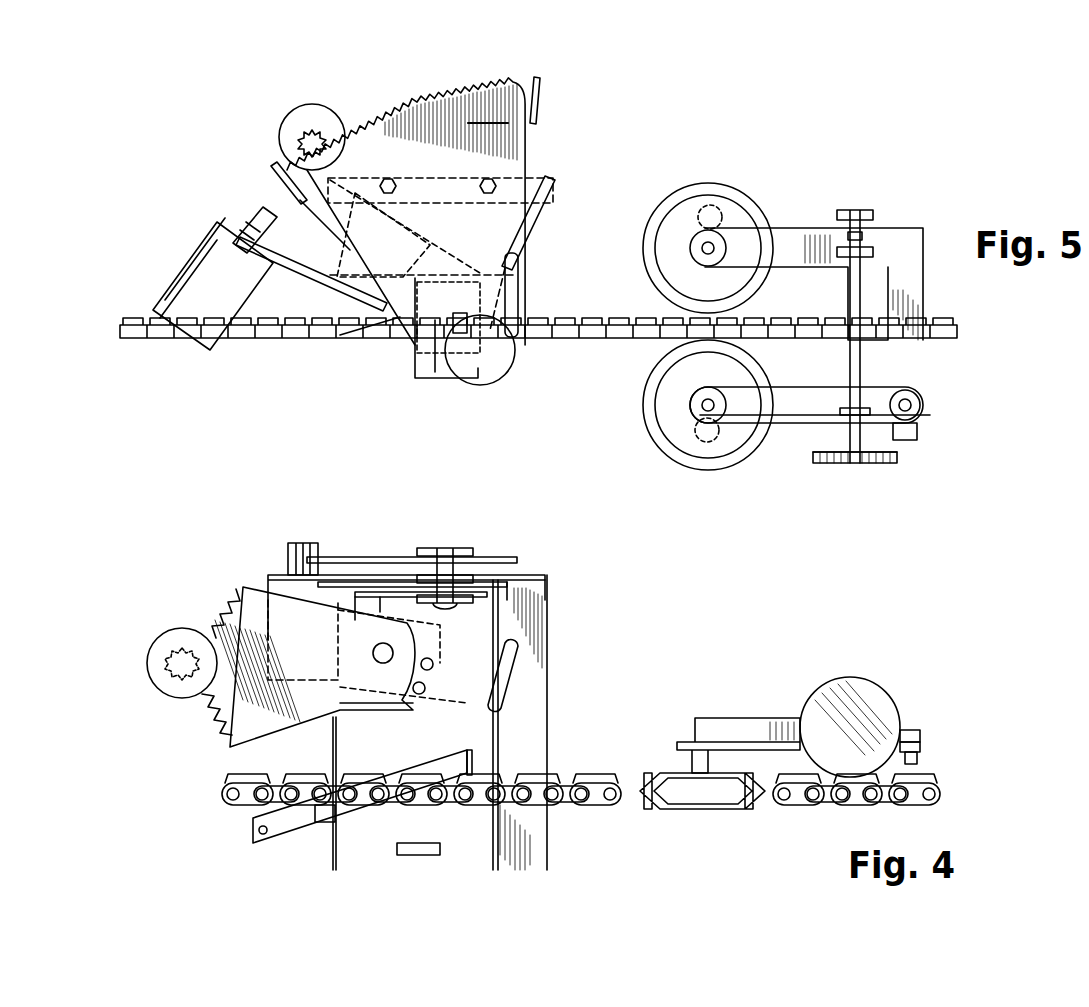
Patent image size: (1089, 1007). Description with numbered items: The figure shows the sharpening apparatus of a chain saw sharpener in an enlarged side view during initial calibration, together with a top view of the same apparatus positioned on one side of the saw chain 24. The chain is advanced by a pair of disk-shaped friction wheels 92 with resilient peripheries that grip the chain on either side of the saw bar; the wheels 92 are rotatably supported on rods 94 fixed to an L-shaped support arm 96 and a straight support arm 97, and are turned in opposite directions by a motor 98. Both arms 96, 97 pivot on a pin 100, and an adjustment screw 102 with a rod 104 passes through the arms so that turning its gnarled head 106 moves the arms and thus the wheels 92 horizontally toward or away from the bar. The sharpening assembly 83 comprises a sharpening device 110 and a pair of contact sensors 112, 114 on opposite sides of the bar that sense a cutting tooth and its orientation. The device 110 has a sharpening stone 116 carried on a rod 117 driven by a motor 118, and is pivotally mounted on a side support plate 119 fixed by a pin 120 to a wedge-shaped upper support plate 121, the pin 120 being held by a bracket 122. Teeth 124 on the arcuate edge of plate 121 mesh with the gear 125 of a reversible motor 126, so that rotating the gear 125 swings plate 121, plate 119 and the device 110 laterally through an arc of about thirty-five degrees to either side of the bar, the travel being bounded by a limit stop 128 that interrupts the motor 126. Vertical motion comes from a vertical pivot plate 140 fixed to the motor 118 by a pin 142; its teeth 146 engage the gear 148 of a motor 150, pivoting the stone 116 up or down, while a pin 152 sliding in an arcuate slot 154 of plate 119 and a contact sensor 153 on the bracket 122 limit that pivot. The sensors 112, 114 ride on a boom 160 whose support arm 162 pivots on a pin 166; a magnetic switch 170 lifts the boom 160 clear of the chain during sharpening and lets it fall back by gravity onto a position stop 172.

In FIG. 5, the conveyor chain 24 is at (573, 338).
In FIG. 4, the conveyor chain 24 is at (578, 798).
In FIG. 5, the sharpening assembly 83 is at (560, 77).
In FIG. 5, the friction wheels 92 is at (695, 183).
In FIG. 4, the friction wheels 92 is at (688, 810).
In FIG. 5, the rods 94 is at (697, 235).
In FIG. 5, the L-shaped support arm 96 is at (800, 235).
In FIG. 5, the straight support arm 97 is at (795, 407).
In FIG. 4, the straight support arm 97 is at (763, 727).
In FIG. 5, the motor 98 is at (712, 208).
In FIG. 5, the pin 100 is at (907, 405).
In FIG. 4, the pin 100 is at (903, 738).
In FIG. 5, the adjustment screw 102 is at (897, 458).
In FIG. 4, the adjustment screw 102 is at (872, 708).
In FIG. 5, the rod 104 is at (855, 293).
In FIG. 5, the gnarled head 106 is at (855, 465).
In FIG. 4, the gnarled head 106 is at (907, 707).
In FIG. 5, the sharpening device 110 is at (440, 265).
In FIG. 4, the sharpening device 110 is at (470, 610).
In FIG. 5, the contact sensor 112 is at (490, 280).
In FIG. 5, the contact sensor 114 is at (463, 373).
In FIG. 4, the contact sensor 114 is at (467, 763).
In FIG. 5, the sharpening stone 116 is at (493, 293).
In FIG. 4, the sharpening stone 116 is at (427, 632).
In FIG. 5, the rod 117 is at (393, 338).
In FIG. 5, the motor 118 is at (395, 238).
In FIG. 4, the motor 118 is at (385, 600).
In FIG. 4, the side support plate 119 is at (530, 592).
In FIG. 5, the pin 120 is at (477, 338).
In FIG. 4, the pin 120 is at (442, 547).
In FIG. 5, the upper support plate 121 is at (488, 111).
In FIG. 4, the upper support plate 121 is at (407, 550).
In FIG. 4, the bracket 122 is at (530, 592).
In FIG. 5, the teeth 124 is at (425, 103).
In FIG. 5, the gear 125 is at (310, 145).
In FIG. 4, the gear 125 is at (298, 553).
In FIG. 5, the motor 126 is at (312, 122).
In FIG. 5, the limit stop 128 is at (287, 170).
In FIG. 4, the vertical pivot plate 140 is at (330, 698).
In FIG. 4, the pin 142 is at (385, 658).
In FIG. 4, the teeth 146 is at (235, 600).
In FIG. 4, the gear 148 is at (172, 652).
In FIG. 5, the motor 150 is at (200, 268).
In FIG. 4, the motor 150 is at (172, 688).
In FIG. 4, the pin 152 is at (440, 695).
In FIG. 4, the contact sensor 153 is at (297, 548).
In FIG. 4, the arcuate slot 154 is at (500, 710).
In FIG. 4, the boom 160 is at (353, 808).
In FIG. 4, the support arm 162 is at (373, 805).
In FIG. 4, the pin 166 is at (263, 831).
In FIG. 4, the magnetic switch 170 is at (318, 814).
In FIG. 4, the position stop 172 is at (413, 853).